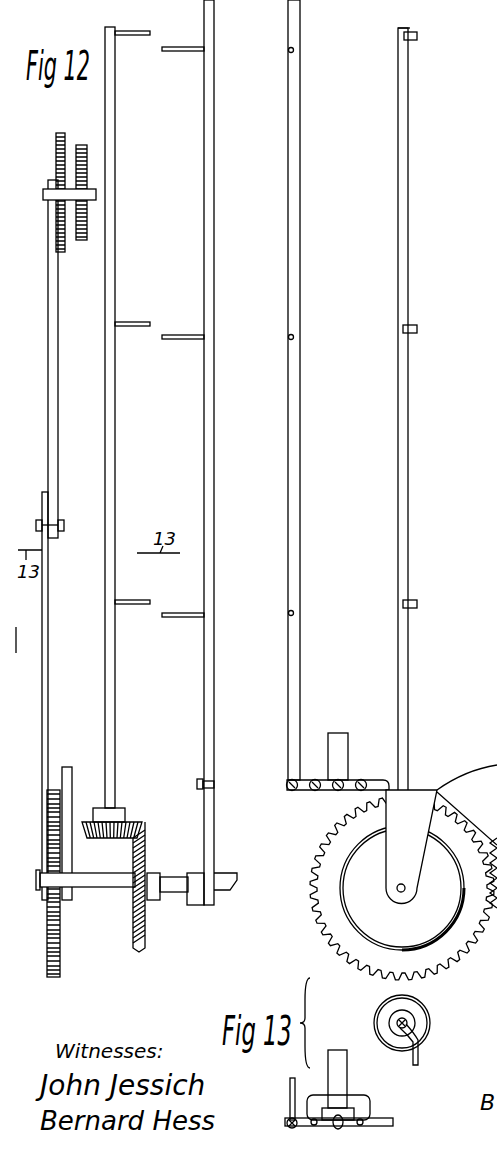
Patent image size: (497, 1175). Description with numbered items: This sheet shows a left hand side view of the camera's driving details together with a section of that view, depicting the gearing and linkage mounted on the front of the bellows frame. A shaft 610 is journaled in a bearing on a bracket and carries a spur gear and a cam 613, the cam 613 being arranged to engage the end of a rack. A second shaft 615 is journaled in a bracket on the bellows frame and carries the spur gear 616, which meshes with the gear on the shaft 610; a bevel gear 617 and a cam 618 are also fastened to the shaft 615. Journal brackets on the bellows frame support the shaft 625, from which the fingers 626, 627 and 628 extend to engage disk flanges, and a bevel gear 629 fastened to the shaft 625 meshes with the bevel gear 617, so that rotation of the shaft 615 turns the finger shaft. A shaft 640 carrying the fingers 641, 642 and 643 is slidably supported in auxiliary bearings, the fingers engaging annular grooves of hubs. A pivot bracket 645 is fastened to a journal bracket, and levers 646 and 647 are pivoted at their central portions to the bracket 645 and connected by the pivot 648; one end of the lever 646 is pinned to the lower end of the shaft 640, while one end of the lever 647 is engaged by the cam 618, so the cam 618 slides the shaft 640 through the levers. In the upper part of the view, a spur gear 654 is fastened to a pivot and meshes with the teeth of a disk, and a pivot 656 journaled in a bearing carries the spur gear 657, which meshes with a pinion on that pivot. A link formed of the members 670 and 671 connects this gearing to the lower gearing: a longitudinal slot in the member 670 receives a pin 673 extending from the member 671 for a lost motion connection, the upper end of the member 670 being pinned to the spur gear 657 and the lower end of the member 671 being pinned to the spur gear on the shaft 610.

In FIG. 12, the shaft 610 is at (167, 868).
In FIG. 12, the cam 613 is at (70, 767).
In FIG. 12, the shaft 615 is at (86, 888).
In FIG. 13, the shaft 615 is at (406, 888).
In FIG. 12, the spur gear 616 is at (52, 978).
In FIG. 13, the spur gear 616 is at (312, 876).
In FIG. 12, the bevel gear 617 is at (132, 930).
In FIG. 13, the bevel gear 617 is at (400, 898).
In FIG. 12, the cam 618 is at (214, 876).
In FIG. 12, the shaft 625 is at (116, 745).
In FIG. 13, the shaft 625 is at (408, 652).
In FIG. 12, the finger 626 is at (135, 31).
In FIG. 13, the finger 626 is at (413, 40).
In FIG. 12, the finger 627 is at (137, 319).
In FIG. 13, the finger 627 is at (417, 329).
In FIG. 12, the finger 628 is at (137, 597).
In FIG. 13, the finger 628 is at (417, 604).
In FIG. 12, the bevel gear 629 is at (137, 831).
In FIG. 13, the bevel gear 629 is at (383, 1009).
In FIG. 12, the shaft 640 is at (204, 464).
In FIG. 13, the shaft 640 is at (300, 453).
In FIG. 12, the finger 641 is at (193, 40).
In FIG. 13, the finger 641 is at (294, 50).
In FIG. 12, the finger 642 is at (181, 331).
In FIG. 13, the finger 642 is at (294, 337).
In FIG. 12, the finger 643 is at (177, 611).
In FIG. 13, the finger 643 is at (294, 613).
In FIG. 13, the pivot bracket 645 is at (395, 696).
In FIG. 12, the lever 646 is at (200, 780).
In FIG. 13, the lever 646 is at (305, 780).
In FIG. 13, the lever 647 is at (375, 780).
In FIG. 13, the pivot 648 is at (335, 792).
In FIG. 12, the spur gear 654 is at (82, 240).
In FIG. 12, the pivot 656 is at (45, 195).
In FIG. 12, the spur gear 657 is at (59, 133).
In FIG. 12, the link member 670 is at (57, 392).
In FIG. 12, the link member 671 is at (48, 605).
In FIG. 12, the pin 673 is at (59, 526).